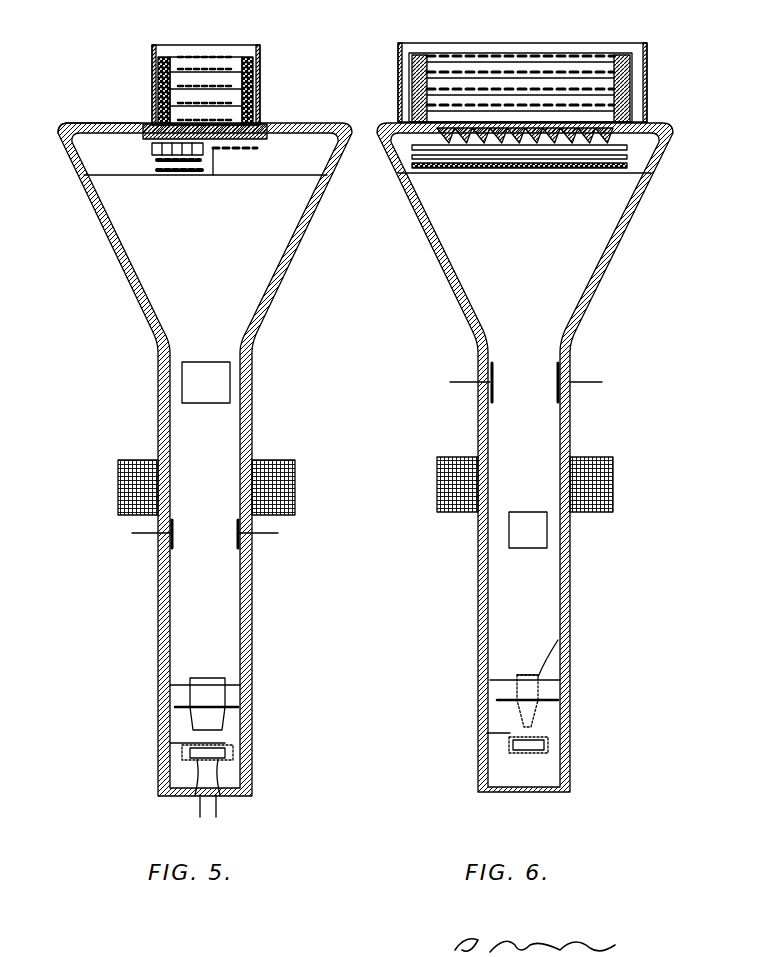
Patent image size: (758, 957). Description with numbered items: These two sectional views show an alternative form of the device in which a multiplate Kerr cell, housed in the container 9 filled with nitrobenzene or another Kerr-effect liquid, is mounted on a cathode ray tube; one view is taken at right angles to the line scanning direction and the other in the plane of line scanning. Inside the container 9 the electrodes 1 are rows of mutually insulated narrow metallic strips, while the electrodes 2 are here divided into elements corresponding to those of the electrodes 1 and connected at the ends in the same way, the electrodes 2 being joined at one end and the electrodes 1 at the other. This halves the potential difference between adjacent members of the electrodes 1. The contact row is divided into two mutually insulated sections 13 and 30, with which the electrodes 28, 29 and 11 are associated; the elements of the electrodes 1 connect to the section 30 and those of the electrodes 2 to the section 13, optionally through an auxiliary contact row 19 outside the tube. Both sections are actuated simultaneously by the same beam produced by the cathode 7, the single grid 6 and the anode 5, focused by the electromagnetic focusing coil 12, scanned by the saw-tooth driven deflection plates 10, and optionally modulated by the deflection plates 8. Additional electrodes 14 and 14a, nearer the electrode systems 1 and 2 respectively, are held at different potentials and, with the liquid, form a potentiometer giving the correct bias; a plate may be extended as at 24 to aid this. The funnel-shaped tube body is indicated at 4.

In FIG. 5, the electrodes 1 is at (185, 53).
In FIG. 6, the electrodes 1 is at (575, 55).
In FIG. 5, the electrodes 2 is at (227, 100).
In FIG. 6, the electrodes 2 is at (453, 98).
In FIG. 5, the funnel-shaped housing 4 is at (205, 459).
In FIG. 6, the funnel-shaped housing 4 is at (618, 245).
In FIG. 5, the anode 5 is at (198, 690).
In FIG. 6, the anode 5 is at (518, 683).
In FIG. 5, the grid 6 is at (170, 743).
In FIG. 6, the grid 6 is at (510, 733).
In FIG. 5, the cathode 7 is at (197, 757).
In FIG. 6, the cathode 7 is at (528, 745).
In FIG. 5, the electrostatic deflection plates 8 is at (162, 547).
In FIG. 6, the electrostatic deflection plates 8 is at (518, 537).
In FIG. 5, the container 9 is at (152, 52).
In FIG. 6, the container 9 is at (647, 105).
In FIG. 5, the electrostatic deflection plates 10 is at (192, 380).
In FIG. 6, the electrostatic deflection plates 10 is at (492, 393).
In FIG. 5, the electrode 11 is at (183, 171).
In FIG. 6, the electrode 11 is at (588, 168).
In FIG. 5, the electromagnetic focusing coil 12 is at (133, 460).
In FIG. 6, the electromagnetic focusing coil 12 is at (453, 457).
In FIG. 5, the section of contact row 13 is at (260, 138).
In FIG. 5, the additional electrode 14 is at (160, 72).
In FIG. 5, the additional electrode 14a is at (253, 99).
In FIG. 5, the auxiliary contact row 19 is at (277, 130).
In FIG. 5, the extended plate 24 is at (150, 125).
In FIG. 5, the electrode 28 is at (163, 160).
In FIG. 6, the electrode 28 is at (545, 159).
In FIG. 5, the electrode 29 is at (153, 145).
In FIG. 6, the electrode 29 is at (507, 150).
In FIG. 5, the section of contact row 30 is at (58, 135).
In FIG. 6, the section of contact row 30 is at (467, 137).